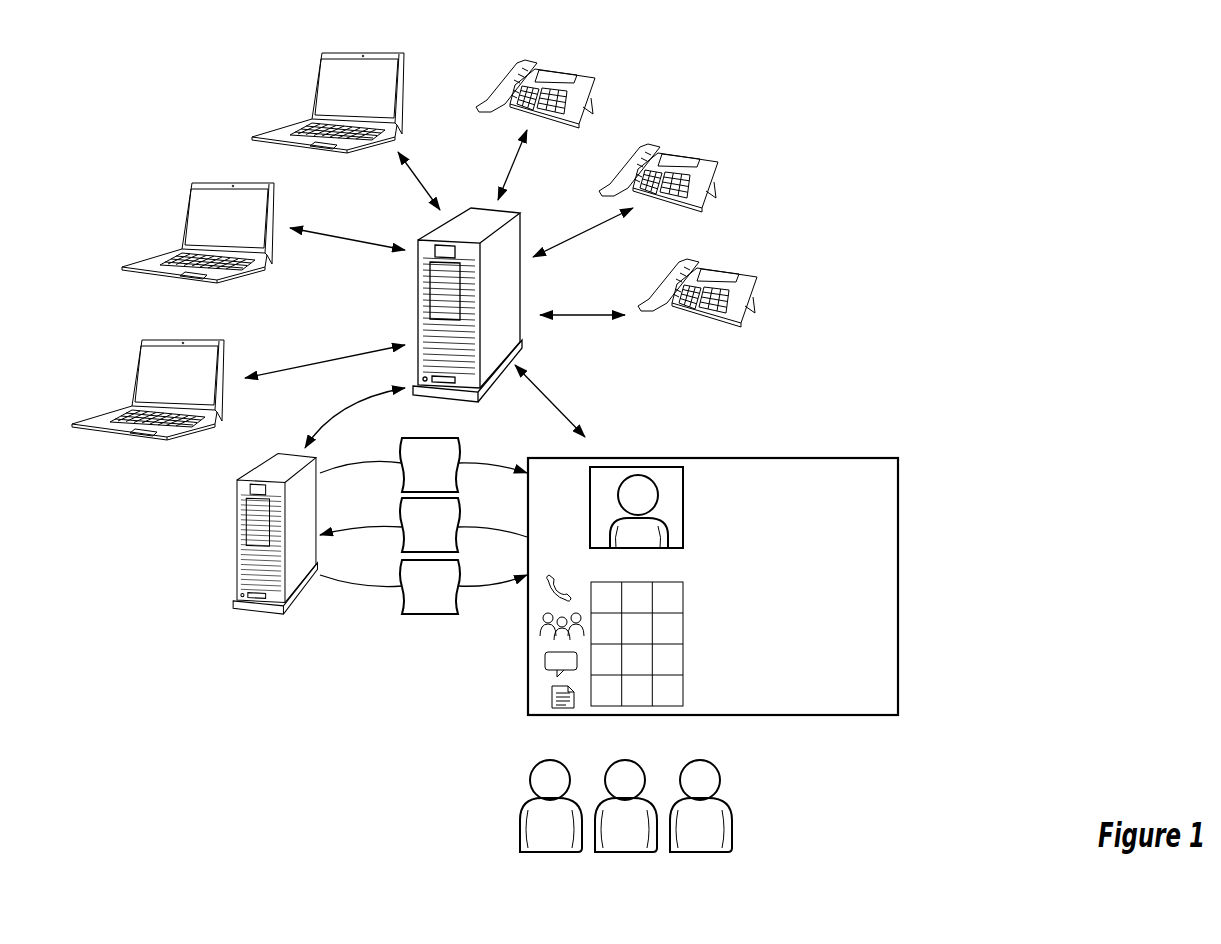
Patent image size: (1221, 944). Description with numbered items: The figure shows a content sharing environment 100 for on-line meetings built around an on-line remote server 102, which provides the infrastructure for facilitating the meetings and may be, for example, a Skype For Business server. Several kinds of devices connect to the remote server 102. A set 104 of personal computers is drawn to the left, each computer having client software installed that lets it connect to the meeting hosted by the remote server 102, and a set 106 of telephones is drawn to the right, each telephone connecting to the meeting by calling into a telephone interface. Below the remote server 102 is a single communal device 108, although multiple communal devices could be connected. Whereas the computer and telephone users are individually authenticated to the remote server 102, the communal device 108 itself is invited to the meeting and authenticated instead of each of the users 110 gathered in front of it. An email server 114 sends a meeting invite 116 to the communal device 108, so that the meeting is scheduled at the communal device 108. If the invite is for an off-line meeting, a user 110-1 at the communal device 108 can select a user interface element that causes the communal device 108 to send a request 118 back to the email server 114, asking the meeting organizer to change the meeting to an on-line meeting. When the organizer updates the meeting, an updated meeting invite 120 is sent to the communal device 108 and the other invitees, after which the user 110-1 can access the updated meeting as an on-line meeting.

The content sharing environment 100 is at (1020, 200).
The remote server 102 is at (507, 327).
The set of personal computers 104 is at (143, 150).
The set of telephones 106 is at (775, 140).
The communal device 108 is at (813, 457).
The users 110 is at (675, 791).
The user 110-1 is at (558, 762).
The email server 114 is at (222, 565).
The meeting invite 116 is at (447, 475).
The request 118 is at (447, 535).
The updated meeting invite 120 is at (447, 597).